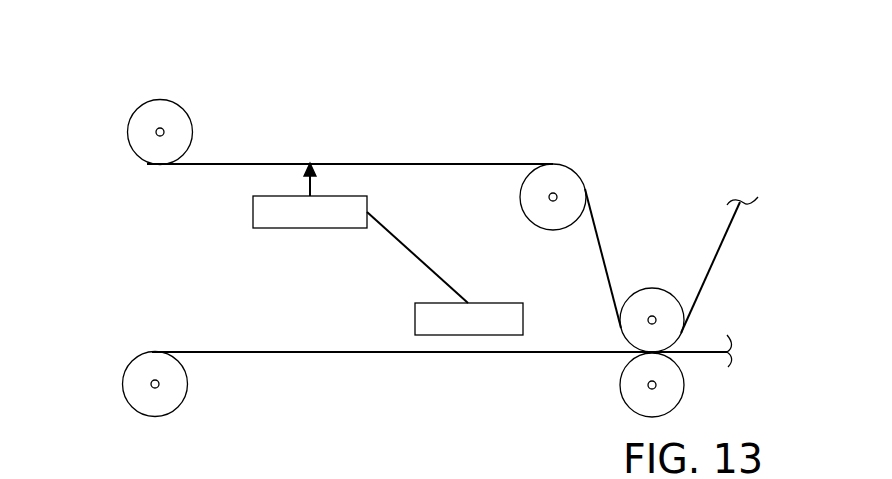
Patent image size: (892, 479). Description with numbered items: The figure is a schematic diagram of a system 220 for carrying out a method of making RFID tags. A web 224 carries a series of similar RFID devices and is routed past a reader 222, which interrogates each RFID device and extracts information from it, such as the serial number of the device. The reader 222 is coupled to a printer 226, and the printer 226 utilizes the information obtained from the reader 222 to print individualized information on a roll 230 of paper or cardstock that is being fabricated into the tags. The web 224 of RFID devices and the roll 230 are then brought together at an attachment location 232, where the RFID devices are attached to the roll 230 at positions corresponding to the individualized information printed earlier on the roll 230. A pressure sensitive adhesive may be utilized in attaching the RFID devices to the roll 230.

The system 220 is at (131, 73).
The reader 222 is at (253, 209).
The web of RFID devices 224 is at (218, 163).
The printer 226 is at (415, 320).
The roll of paper or cardstock 230 is at (225, 353).
The attachment location 232 is at (624, 262).